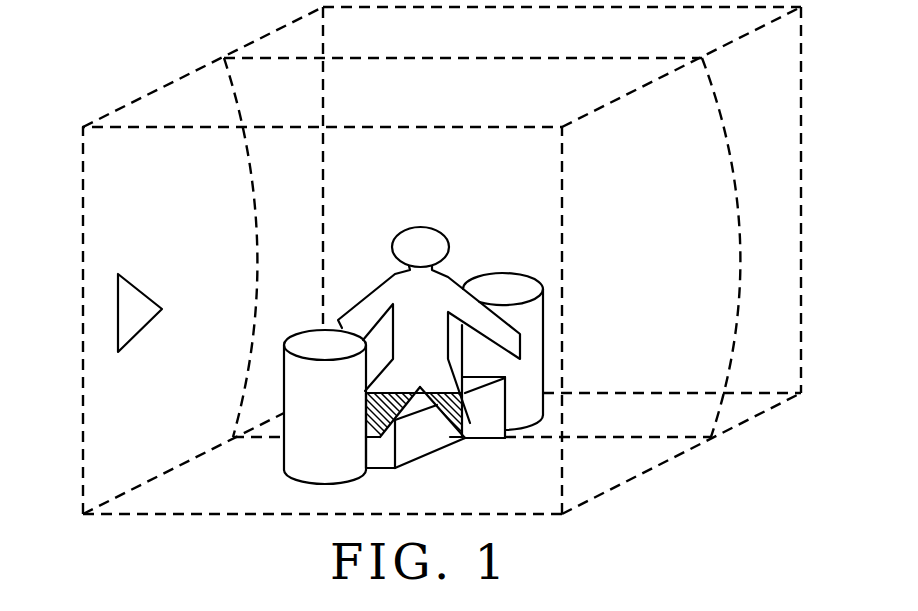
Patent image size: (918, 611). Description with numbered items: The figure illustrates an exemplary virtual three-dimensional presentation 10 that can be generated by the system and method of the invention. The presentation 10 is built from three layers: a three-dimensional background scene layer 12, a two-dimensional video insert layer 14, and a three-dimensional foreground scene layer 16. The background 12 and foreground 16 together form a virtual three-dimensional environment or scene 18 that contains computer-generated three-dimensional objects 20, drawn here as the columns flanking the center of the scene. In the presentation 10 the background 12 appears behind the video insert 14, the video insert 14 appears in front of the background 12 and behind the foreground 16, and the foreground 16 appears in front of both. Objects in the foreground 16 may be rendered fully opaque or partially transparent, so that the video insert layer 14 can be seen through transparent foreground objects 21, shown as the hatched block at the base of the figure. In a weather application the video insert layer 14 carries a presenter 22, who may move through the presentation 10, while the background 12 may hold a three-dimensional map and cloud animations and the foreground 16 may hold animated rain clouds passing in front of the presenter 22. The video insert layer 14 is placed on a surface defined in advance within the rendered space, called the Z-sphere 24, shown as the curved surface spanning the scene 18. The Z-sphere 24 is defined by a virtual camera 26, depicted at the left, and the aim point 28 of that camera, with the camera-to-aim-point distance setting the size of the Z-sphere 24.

The virtual three-dimensional presentation 10 is at (132, 82).
The three-dimensional background scene layer 12 is at (770, 236).
The two-dimensional video insert layer 14 is at (355, 293).
The three-dimensional foreground scene layer 16 is at (188, 495).
The virtual three-dimensional environment or scene 18 is at (653, 467).
The computer-generated three-dimensional objects 20 is at (295, 451).
The transparent foreground objects 21 is at (470, 423).
The presenter 22 is at (359, 302).
The Z-sphere 24 is at (734, 136).
The virtual camera 26 is at (118, 321).
The aim point 28 is at (434, 259).